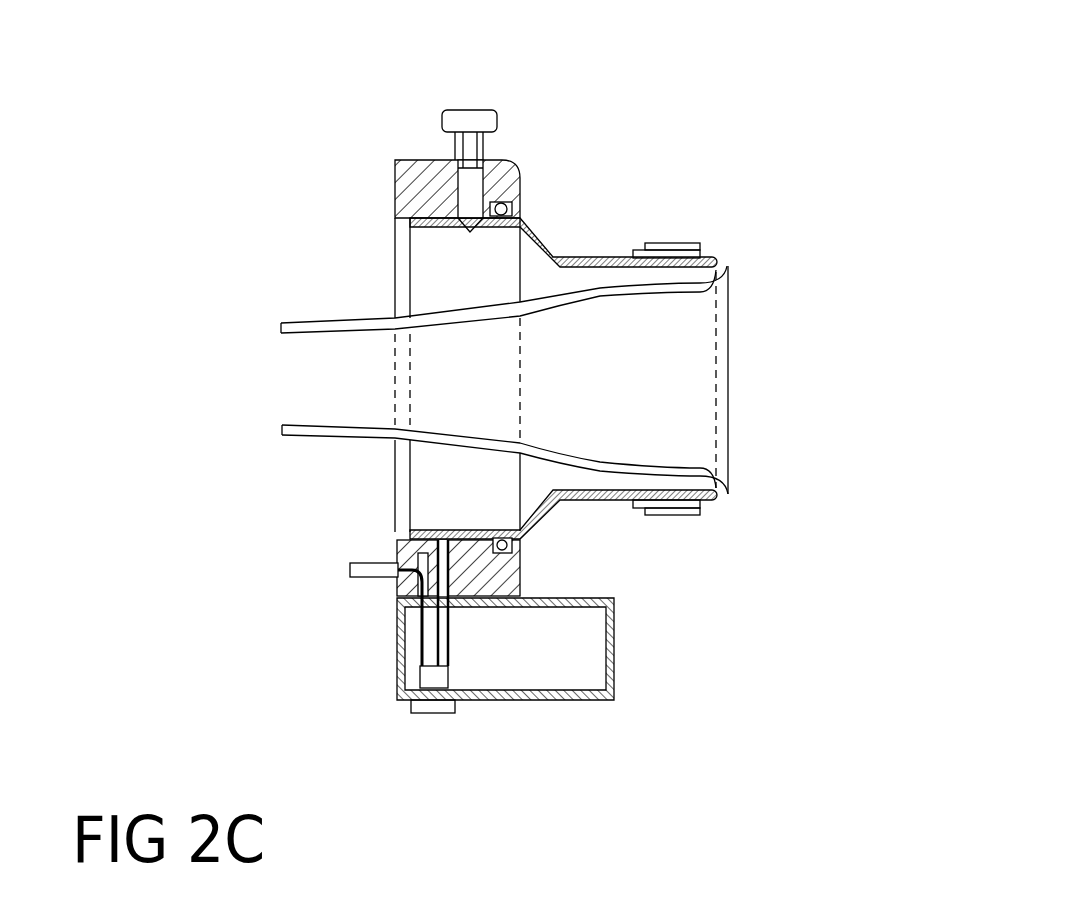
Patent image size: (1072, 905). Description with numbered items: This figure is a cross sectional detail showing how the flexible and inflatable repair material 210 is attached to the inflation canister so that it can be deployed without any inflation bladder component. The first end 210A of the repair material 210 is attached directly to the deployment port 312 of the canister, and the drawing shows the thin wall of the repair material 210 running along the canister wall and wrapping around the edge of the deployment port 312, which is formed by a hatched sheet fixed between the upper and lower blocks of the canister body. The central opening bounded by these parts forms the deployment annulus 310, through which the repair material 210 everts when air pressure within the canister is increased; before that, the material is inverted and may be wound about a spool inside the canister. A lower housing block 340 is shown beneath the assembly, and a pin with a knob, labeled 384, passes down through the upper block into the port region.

The repair material 210 is at (307, 318).
The first end of the repair material 210A is at (673, 468).
The deployment annulus 310 is at (800, 382).
The deployment port 312 is at (610, 500).
The housing block 340 is at (522, 584).
The locking pin / knob 384 is at (476, 98).